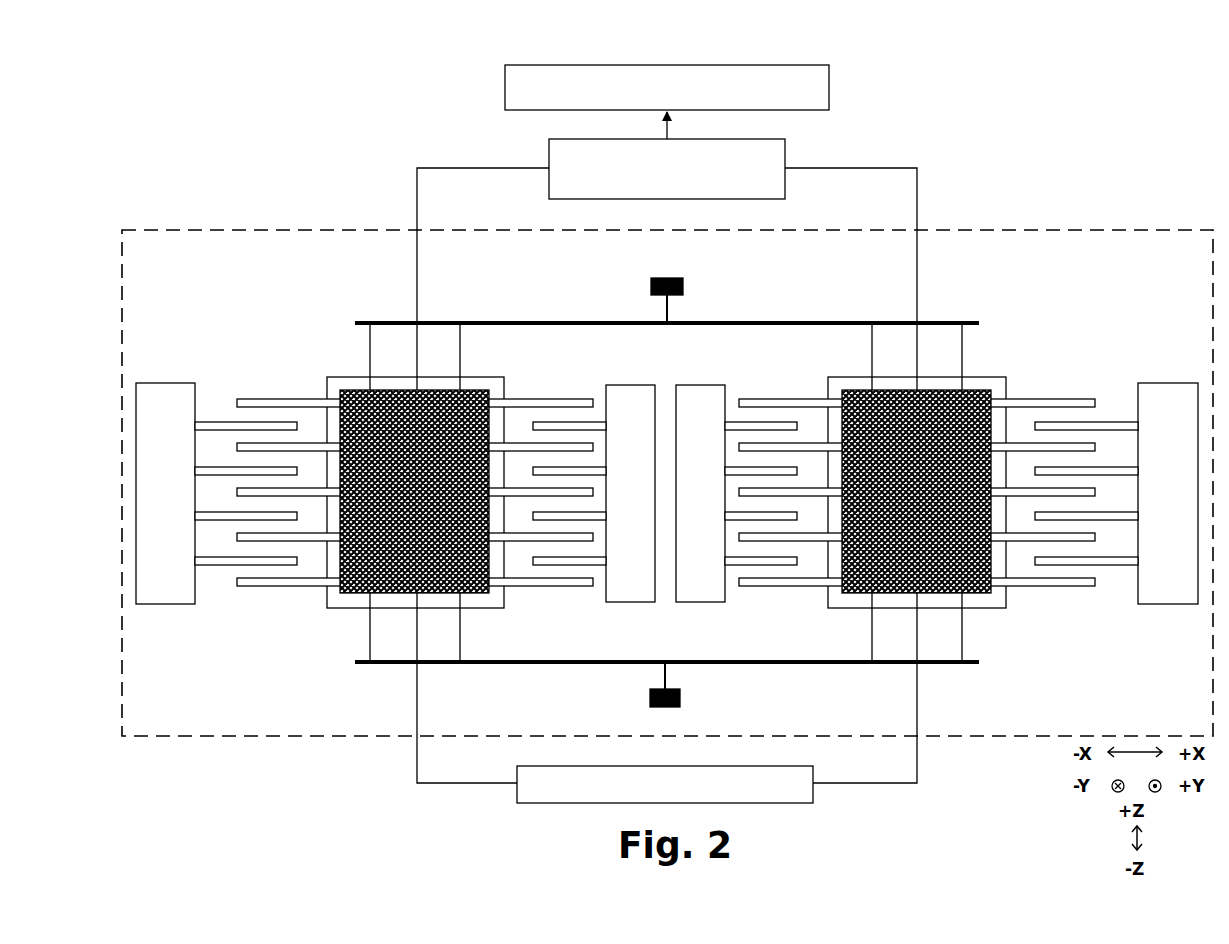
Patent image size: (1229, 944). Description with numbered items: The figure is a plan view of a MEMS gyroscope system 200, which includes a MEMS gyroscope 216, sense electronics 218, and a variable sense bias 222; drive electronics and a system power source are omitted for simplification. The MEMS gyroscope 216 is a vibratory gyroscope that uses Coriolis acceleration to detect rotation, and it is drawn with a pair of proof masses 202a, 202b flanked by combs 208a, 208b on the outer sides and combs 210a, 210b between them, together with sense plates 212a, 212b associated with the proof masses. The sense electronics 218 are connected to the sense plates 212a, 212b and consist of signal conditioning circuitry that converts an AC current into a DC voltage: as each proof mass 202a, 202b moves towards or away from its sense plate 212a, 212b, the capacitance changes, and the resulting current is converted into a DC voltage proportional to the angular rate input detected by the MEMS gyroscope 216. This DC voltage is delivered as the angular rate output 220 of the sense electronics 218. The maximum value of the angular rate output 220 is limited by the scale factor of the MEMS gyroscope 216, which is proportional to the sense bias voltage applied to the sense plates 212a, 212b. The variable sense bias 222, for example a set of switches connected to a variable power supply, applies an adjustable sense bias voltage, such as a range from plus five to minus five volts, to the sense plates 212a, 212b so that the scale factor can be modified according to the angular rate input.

The MEMS gyroscope system 200 is at (1037, 108).
The proof mass 202a is at (355, 400).
The proof mass 202b is at (963, 405).
The drive electrode 208a is at (196, 383).
The drive electrode 208b is at (1152, 383).
The sense electrode 210a is at (625, 385).
The sense electrode 210b is at (705, 385).
The sense plate 212a is at (330, 592).
The sense plate 212b is at (1000, 592).
The MEMS gyroscope 216 is at (975, 230).
The sense electronics 218 is at (785, 143).
The angular rate output 220 is at (829, 83).
The variable sense bias 222 is at (813, 798).